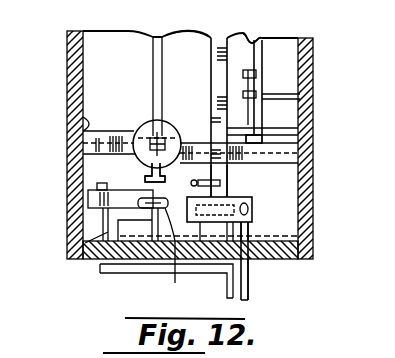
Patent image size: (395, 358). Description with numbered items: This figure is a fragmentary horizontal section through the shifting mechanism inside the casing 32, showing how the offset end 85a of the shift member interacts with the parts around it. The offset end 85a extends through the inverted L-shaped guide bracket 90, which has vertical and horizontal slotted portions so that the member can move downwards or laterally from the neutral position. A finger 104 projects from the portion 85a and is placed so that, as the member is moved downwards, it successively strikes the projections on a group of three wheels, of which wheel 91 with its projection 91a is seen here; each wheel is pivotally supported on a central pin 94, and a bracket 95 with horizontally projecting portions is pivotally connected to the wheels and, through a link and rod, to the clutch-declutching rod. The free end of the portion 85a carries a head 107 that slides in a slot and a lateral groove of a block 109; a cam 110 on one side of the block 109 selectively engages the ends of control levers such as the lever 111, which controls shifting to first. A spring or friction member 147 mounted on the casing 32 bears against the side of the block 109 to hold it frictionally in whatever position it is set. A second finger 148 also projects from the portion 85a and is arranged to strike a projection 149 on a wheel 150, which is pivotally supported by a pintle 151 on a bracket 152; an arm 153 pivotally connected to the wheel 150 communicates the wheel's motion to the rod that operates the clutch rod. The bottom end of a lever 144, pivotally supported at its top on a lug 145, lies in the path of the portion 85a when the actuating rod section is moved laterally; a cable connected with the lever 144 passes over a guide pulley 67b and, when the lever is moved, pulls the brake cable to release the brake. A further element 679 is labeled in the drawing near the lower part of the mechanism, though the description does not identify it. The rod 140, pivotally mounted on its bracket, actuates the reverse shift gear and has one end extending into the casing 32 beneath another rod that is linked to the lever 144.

The casing 32 is at (180, 147).
The arm 153 is at (149, 37).
The offset end 85a is at (191, 33).
The bracket 95 is at (244, 34).
The bracket 152 is at (78, 110).
The wheel 150 is at (149, 121).
The pintle 151 is at (164, 133).
The wheel 91 is at (258, 88).
The central pin 94 is at (302, 97).
The finger 104 is at (262, 131).
The projection 91a is at (268, 125).
The guide bracket 90 is at (83, 144).
The lug 145 is at (83, 173).
The guide pulley 67b is at (147, 191).
The lever 144 is at (88, 197).
The projection 149 is at (179, 192).
The rod 679 is at (163, 256).
The cam 110 is at (248, 194).
The finger 148 is at (231, 172).
The head 107 is at (252, 216).
The rod 140 is at (70, 224).
The lever 111 is at (250, 290).
The block 109 is at (200, 259).
The friction member 147 is at (66, 253).